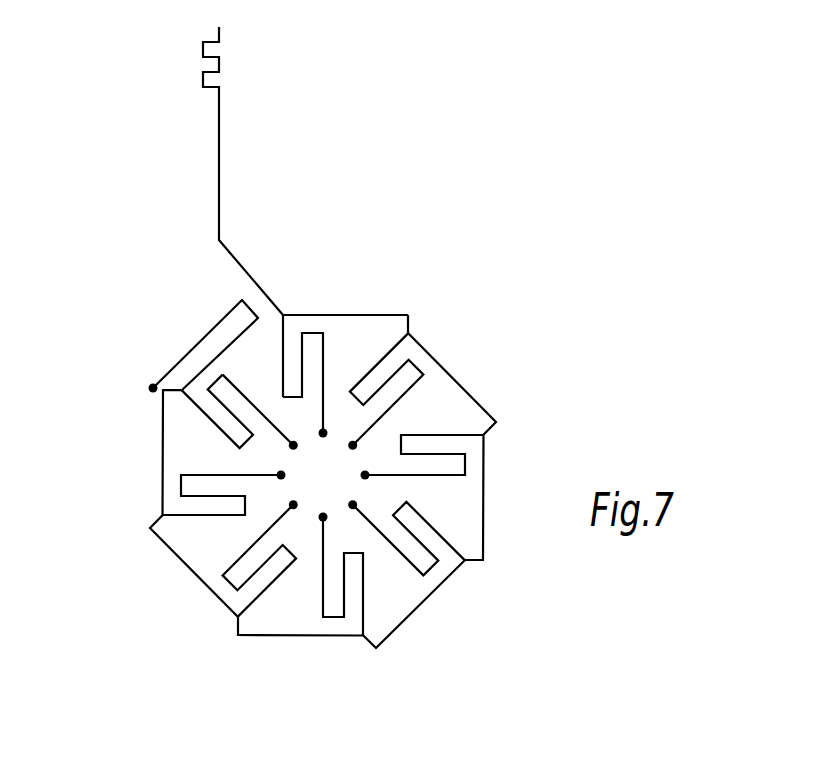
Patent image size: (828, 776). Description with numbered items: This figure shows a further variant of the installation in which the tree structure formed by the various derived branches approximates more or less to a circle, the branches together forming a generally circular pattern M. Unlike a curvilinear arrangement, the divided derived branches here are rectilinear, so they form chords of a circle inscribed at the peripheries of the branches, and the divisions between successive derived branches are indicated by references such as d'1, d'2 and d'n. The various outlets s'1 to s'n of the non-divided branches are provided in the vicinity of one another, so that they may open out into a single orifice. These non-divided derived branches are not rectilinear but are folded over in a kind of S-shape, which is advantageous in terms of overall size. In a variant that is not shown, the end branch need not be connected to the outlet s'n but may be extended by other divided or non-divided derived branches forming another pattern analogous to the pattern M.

The pattern M is at (394, 337).
The first slot element d'1 is at (310, 341).
The second slot element d'2 is at (414, 349).
The n-th slot element d'n is at (174, 424).
The outlet s'1 is at (340, 391).
The outlet s'n is at (316, 462).